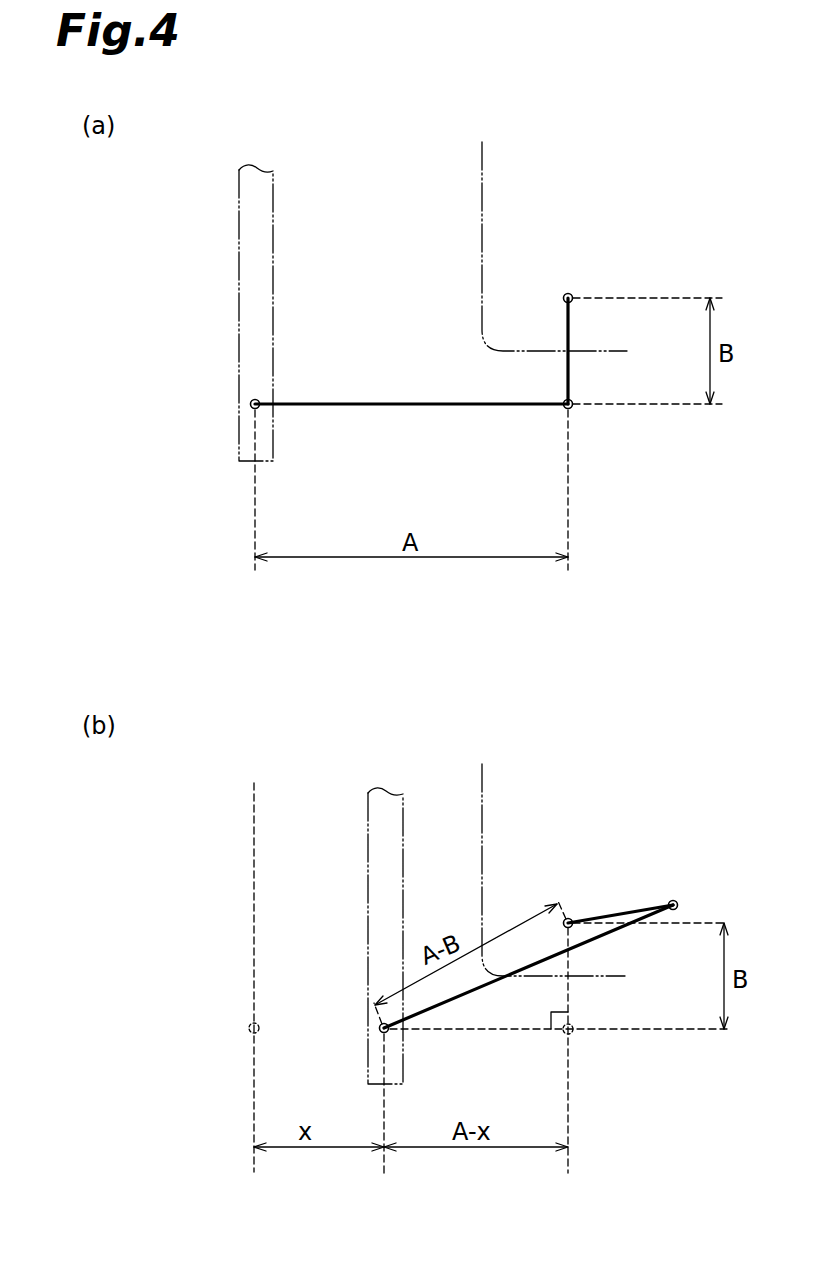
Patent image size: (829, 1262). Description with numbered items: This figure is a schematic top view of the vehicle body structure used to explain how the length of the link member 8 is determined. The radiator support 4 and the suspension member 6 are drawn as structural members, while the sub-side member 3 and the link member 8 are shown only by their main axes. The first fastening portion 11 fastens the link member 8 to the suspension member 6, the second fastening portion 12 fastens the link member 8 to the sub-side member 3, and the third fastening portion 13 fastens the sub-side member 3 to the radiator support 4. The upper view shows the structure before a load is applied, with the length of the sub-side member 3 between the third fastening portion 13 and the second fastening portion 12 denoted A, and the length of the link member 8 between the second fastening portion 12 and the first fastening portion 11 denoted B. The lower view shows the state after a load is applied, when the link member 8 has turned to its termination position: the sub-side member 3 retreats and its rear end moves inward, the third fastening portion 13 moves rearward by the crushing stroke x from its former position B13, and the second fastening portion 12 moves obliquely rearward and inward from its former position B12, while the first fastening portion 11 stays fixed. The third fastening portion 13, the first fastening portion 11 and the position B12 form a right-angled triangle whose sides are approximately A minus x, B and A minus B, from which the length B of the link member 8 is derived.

The sub-side member 3 is at (404, 406).
The radiator support 4 is at (239, 262).
The suspension member 6 is at (482, 232).
The link member 8 is at (571, 368).
The first fastening portion 11 is at (567, 293).
The second fastening portion 12 is at (572, 407).
The third fastening portion 13 is at (251, 404).
The position of the third fastening portion before movement B13 is at (250, 1025).
The position of the second fastening portion before movement B12 is at (573, 1034).